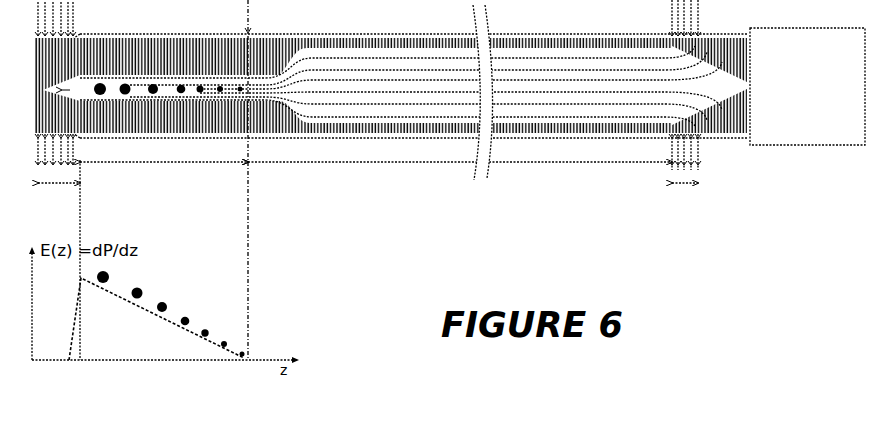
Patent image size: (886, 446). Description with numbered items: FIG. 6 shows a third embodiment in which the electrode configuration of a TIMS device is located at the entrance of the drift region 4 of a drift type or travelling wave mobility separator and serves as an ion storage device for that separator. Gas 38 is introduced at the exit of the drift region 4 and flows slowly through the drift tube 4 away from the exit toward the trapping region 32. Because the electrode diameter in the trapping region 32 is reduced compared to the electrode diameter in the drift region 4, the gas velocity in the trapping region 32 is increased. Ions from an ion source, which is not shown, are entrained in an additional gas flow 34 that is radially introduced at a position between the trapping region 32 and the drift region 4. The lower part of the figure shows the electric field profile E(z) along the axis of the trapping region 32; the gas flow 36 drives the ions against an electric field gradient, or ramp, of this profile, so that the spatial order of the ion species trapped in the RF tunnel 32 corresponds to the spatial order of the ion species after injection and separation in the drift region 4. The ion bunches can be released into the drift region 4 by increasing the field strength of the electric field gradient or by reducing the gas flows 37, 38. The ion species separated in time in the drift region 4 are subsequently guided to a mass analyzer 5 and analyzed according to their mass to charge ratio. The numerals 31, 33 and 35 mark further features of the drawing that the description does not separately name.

The drift region 4 is at (460, 171).
The mass analyzer 5 is at (807, 86).
The input region 31 is at (59, 260).
The trapping region 32 is at (164, 171).
The output coupling region 33 is at (685, 192).
The additional gas flow 34 is at (257, 180).
The guided light modes 35 is at (401, 86).
The gas flow 36 is at (391, 86).
The gas flow 37 is at (64, 83).
The gas 38 is at (694, 85).